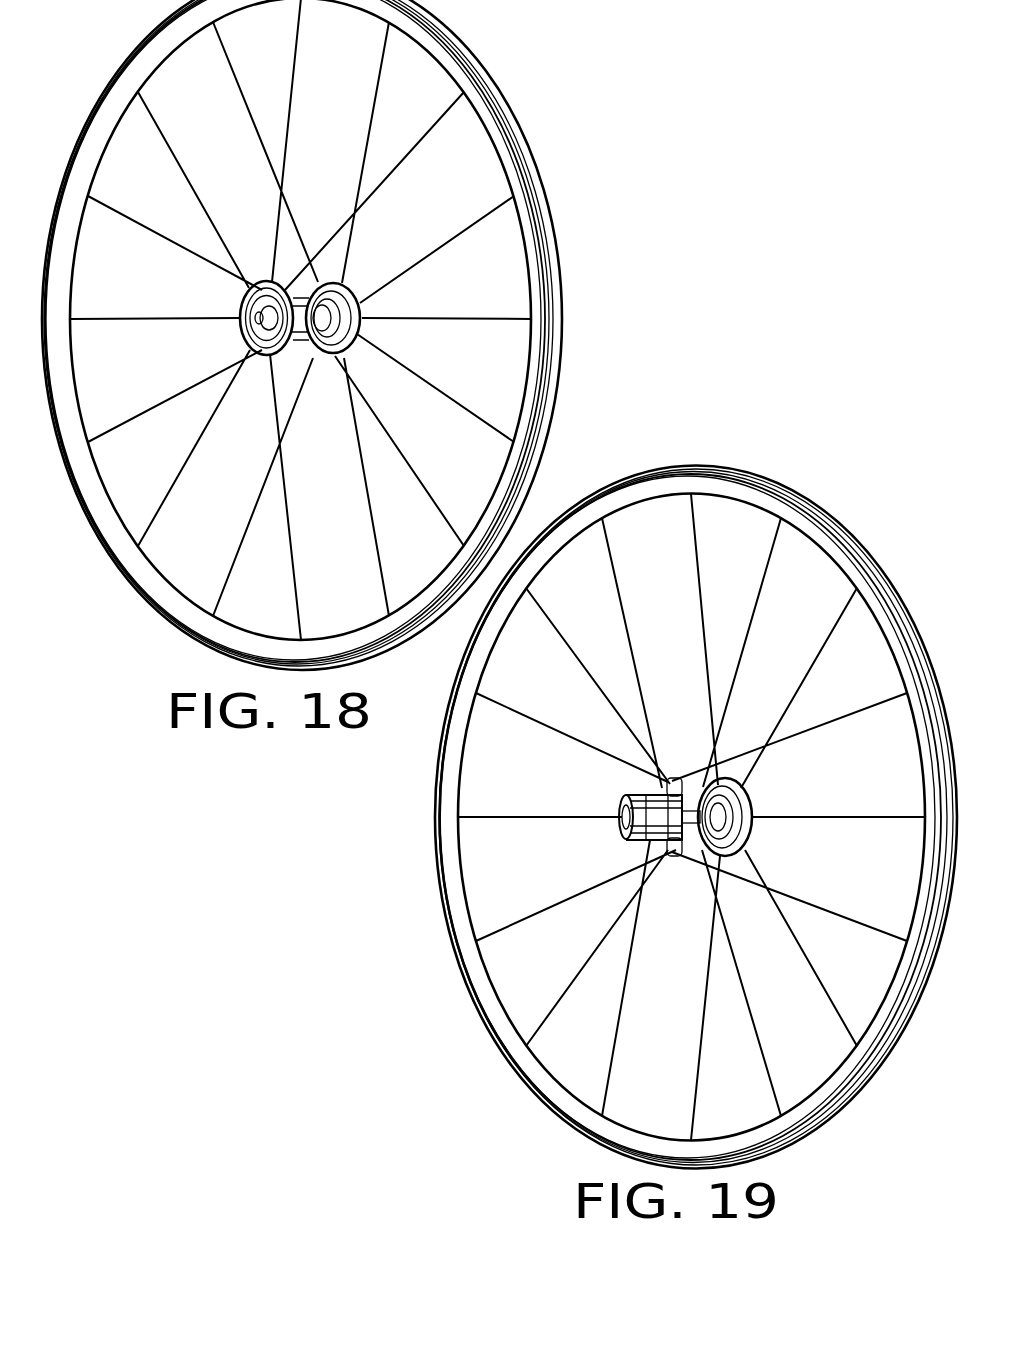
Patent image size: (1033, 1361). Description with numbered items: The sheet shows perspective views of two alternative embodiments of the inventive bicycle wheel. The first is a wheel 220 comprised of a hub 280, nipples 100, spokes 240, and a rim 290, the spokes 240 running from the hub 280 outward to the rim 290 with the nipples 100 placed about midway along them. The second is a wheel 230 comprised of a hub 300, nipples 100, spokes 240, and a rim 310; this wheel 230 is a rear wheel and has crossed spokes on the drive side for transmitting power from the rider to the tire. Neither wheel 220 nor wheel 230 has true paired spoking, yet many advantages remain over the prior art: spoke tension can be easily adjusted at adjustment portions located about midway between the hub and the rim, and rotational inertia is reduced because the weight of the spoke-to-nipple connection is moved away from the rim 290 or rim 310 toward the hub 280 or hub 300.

In FIG. 18, the nipples 100 is at (350, 393).
In FIG. 19, the nipples 100 is at (780, 814).
In FIG. 18, the wheel 220 is at (374, 335).
In FIG. 19, the wheel 230 is at (618, 783).
In FIG. 18, the spokes 240 is at (98, 322).
In FIG. 19, the spokes 240 is at (494, 816).
In FIG. 18, the hub 280 is at (246, 302).
In FIG. 18, the rim 290 is at (566, 293).
In FIG. 19, the hub 300 is at (752, 834).
In FIG. 19, the rim 310 is at (668, 481).